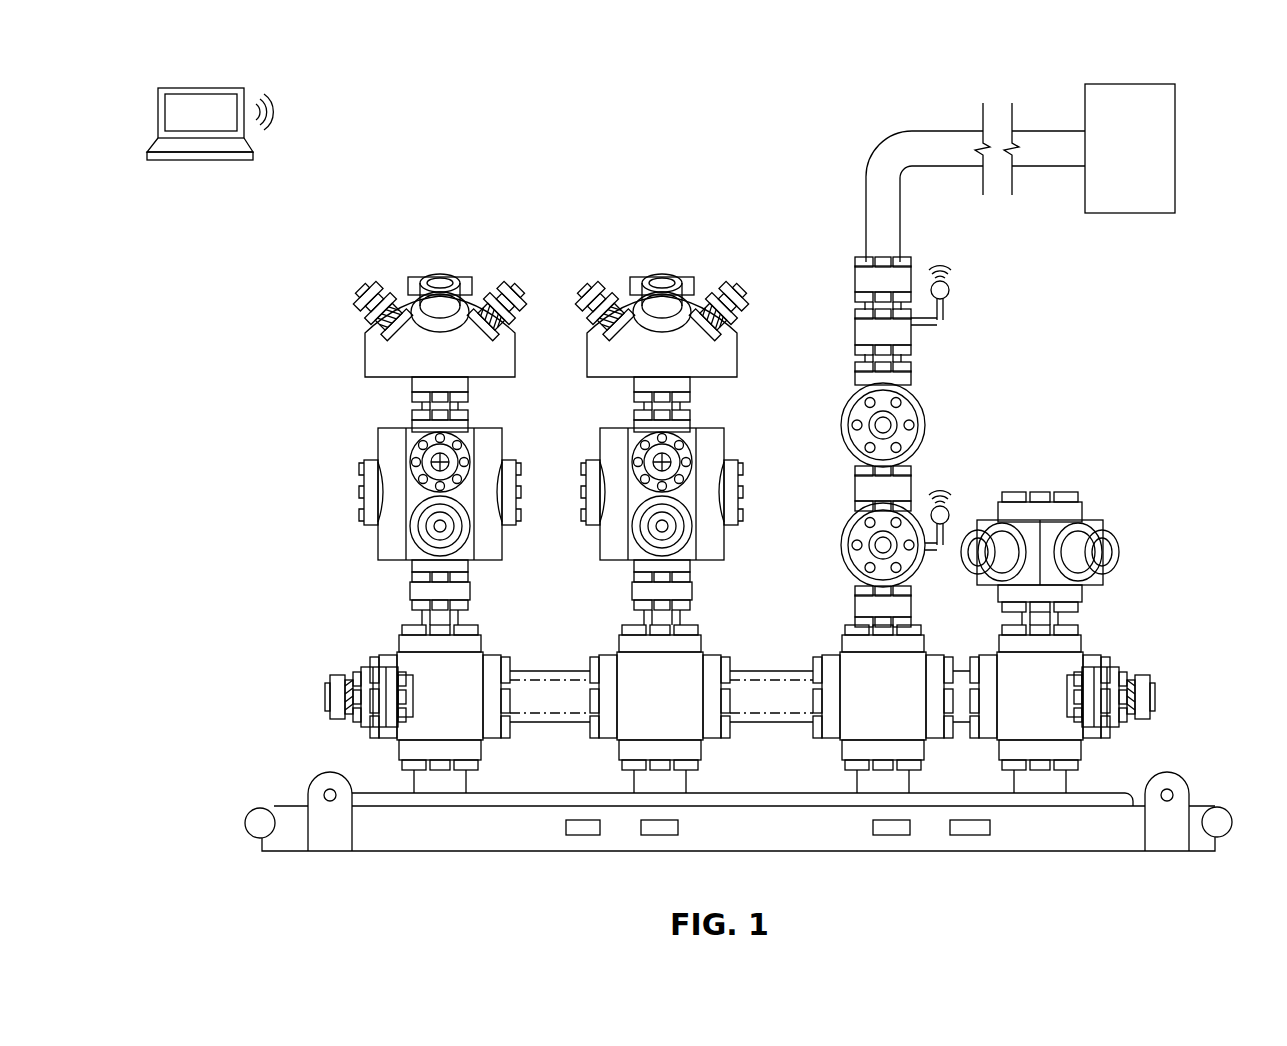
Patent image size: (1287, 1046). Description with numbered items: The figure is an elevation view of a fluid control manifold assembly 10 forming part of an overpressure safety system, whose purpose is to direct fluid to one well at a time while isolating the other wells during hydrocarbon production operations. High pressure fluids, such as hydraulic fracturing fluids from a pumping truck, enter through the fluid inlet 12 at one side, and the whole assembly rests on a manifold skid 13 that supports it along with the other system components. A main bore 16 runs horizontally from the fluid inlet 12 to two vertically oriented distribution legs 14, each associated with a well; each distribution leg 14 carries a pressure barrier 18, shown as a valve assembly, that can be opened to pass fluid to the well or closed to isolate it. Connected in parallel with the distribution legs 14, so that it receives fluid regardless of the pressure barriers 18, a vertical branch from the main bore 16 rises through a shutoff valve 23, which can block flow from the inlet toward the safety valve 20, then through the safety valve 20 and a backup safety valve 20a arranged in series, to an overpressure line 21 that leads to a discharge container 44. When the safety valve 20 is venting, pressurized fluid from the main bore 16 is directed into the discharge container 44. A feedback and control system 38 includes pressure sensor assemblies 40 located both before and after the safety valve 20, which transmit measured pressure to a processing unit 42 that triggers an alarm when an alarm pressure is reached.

The fluid control manifold assembly 10 is at (1142, 288).
The fluid inlet 12 is at (1137, 505).
The manifold skid 13 is at (490, 827).
The distribution leg 14 is at (495, 449).
The main bore 16 is at (752, 688).
The pressure barrier 18 is at (394, 538).
The safety valve 20 is at (936, 390).
The backup safety valve 20a is at (845, 355).
The overpressure line 21 is at (878, 160).
The shutoff valve 23 is at (840, 521).
The feedback and control system 38 is at (302, 92).
The pressure sensor assembly 40 is at (950, 290).
The processing unit 42 is at (240, 148).
The discharge container 44 is at (1165, 118).